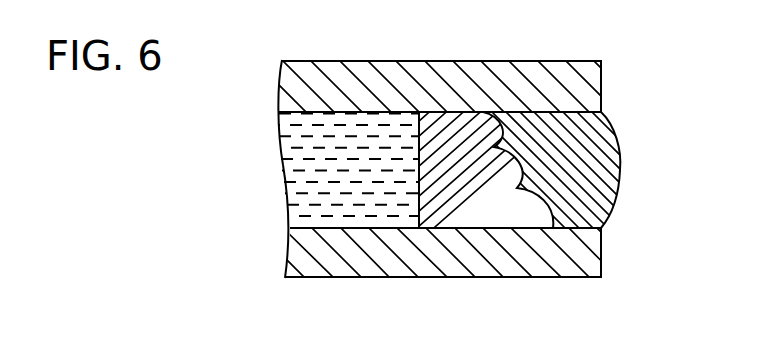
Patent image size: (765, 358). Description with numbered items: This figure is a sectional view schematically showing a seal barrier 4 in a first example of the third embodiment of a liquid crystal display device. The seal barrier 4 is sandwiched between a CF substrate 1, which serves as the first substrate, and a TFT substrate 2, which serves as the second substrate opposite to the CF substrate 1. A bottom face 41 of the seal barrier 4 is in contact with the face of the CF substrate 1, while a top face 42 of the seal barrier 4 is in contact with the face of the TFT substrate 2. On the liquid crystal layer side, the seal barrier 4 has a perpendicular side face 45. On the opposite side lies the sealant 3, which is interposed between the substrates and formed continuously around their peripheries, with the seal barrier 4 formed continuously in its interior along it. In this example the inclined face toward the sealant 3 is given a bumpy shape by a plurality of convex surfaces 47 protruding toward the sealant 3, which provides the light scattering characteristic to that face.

The CF substrate 1 is at (601, 249).
The TFT substrate 2 is at (601, 86).
The sealant 3 is at (619, 166).
The seal barrier 4 is at (481, 138).
The bottom face 41 is at (481, 230).
The top face 42 is at (444, 112).
The side face in the liquid crystal layer side 45 is at (418, 189).
The convex surface 47 is at (524, 152).